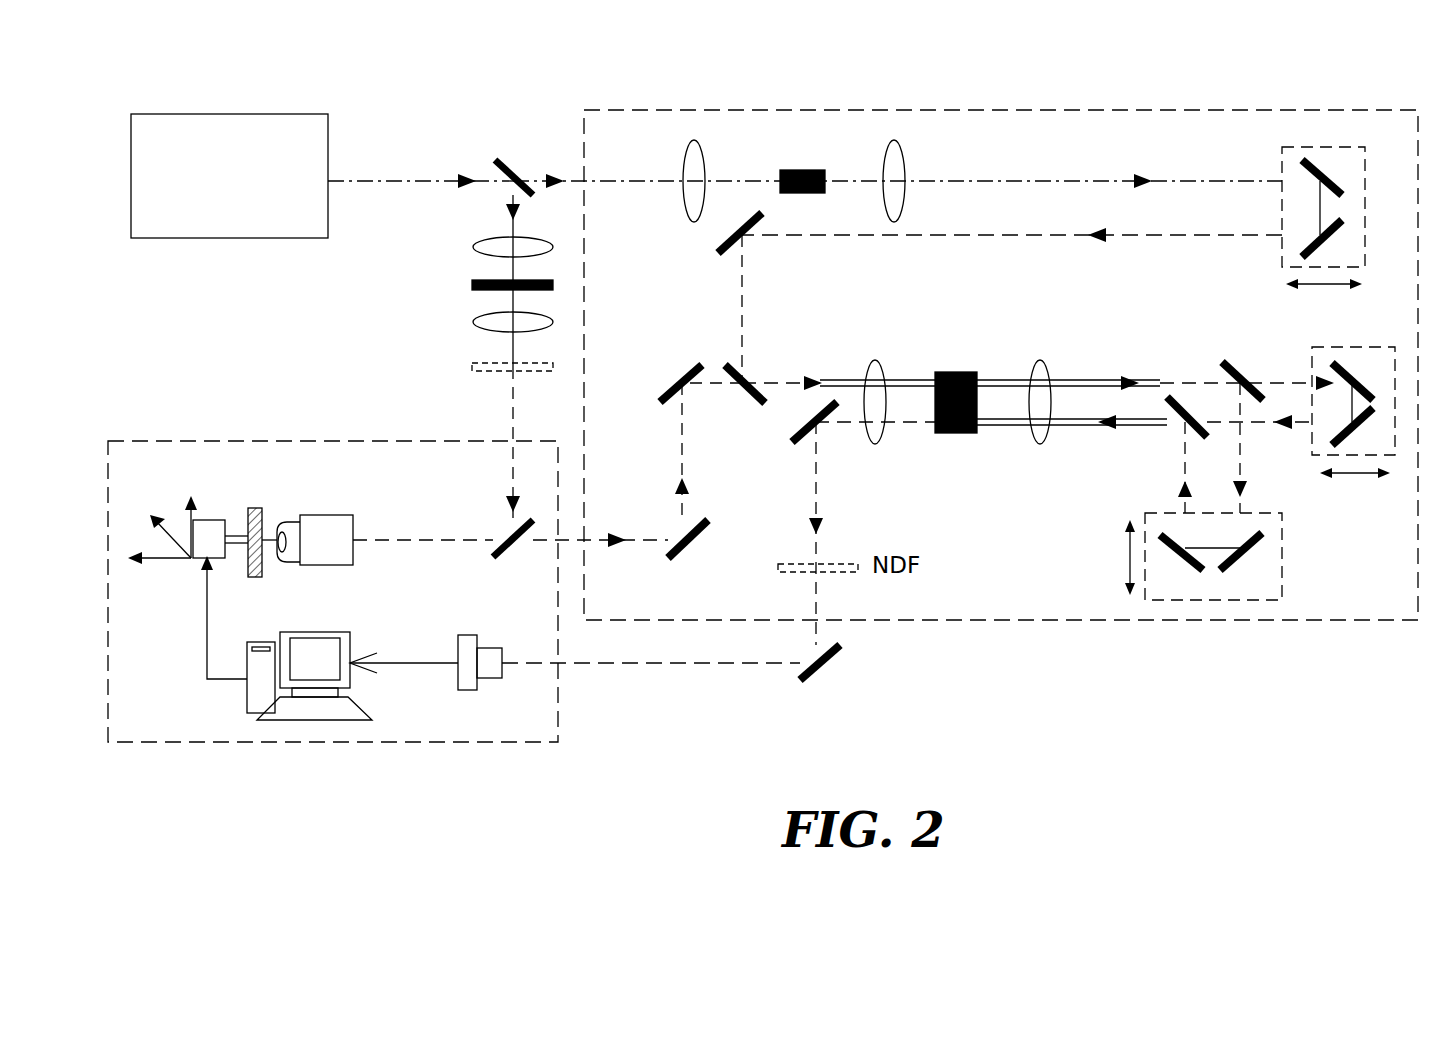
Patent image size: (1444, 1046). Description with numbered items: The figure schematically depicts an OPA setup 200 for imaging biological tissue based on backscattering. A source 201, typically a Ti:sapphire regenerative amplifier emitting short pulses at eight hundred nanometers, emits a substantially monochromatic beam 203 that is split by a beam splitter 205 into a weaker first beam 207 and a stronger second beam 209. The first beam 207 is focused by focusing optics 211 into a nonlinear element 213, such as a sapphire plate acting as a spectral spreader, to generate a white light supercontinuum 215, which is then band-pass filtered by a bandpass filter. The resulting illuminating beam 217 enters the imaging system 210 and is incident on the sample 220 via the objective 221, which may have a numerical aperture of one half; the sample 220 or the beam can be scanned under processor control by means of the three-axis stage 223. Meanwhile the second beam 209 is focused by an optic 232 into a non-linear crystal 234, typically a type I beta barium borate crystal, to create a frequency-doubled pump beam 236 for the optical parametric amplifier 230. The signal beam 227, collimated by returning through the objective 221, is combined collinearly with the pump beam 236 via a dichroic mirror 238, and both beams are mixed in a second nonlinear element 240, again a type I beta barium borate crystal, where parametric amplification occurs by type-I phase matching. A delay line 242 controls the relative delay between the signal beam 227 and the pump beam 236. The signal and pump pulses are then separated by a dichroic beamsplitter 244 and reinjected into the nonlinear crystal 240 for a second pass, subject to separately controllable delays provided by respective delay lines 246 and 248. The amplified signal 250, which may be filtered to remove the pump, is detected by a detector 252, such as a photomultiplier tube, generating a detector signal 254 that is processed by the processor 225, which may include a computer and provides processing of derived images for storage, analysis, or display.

The OPA setup 200 is at (222, 760).
The source 201 is at (229, 176).
The beam 203 is at (345, 180).
The beam splitter 205 is at (498, 163).
The first beam 207 is at (505, 194).
The second beam 209 is at (620, 178).
The imaging system 210 is at (163, 742).
The focusing optics 211 is at (472, 246).
The nonlinear element 213 is at (555, 286).
The white light supercontinuum 215 is at (505, 347).
The illuminating beam 217 is at (420, 542).
The sample 220 is at (263, 506).
The objective 221 is at (322, 528).
The three-axis stage 223 is at (202, 550).
The processor 225 is at (317, 665).
The signal beam 227 is at (540, 545).
The optical parametric amplifier 230 is at (1118, 640).
The optic 232 is at (689, 140).
The non-linear crystal 234 is at (780, 170).
The frequency-doubled pump beam 236 is at (1037, 178).
The dichroic mirror 238 is at (733, 365).
The second nonlinear element 240 is at (960, 372).
The delay line 242 is at (1322, 158).
The dichroic beamsplitter 244 is at (1235, 375).
The delay line 246 is at (1268, 580).
The delay line 248 is at (1375, 367).
The amplified signal 250 is at (727, 662).
The detector 252 is at (473, 665).
The detector signal 254 is at (402, 665).